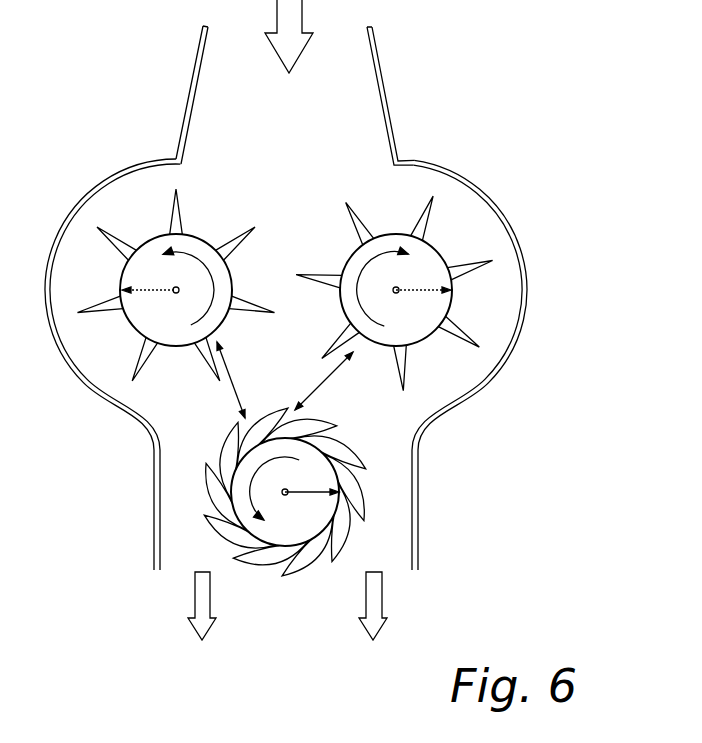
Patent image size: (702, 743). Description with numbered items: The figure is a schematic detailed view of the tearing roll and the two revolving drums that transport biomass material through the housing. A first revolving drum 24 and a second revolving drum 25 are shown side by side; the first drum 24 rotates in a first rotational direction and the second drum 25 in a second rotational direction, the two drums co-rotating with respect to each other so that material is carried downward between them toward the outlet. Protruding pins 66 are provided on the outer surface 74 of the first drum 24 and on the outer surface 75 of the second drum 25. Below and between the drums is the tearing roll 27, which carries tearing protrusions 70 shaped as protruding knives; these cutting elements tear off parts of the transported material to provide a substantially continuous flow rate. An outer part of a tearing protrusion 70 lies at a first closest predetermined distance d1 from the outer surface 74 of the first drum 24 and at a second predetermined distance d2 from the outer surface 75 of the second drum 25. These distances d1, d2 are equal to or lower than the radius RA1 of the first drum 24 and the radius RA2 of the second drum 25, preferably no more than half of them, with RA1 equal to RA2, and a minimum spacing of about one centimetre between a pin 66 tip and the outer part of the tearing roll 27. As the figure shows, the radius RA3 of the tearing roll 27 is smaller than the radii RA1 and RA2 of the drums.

The first revolving drum 24 is at (200, 217).
The second revolving drum 25 is at (395, 225).
The protruding pins 66 is at (247, 230).
The outer surface of the first drum 74 is at (226, 325).
The outer surface of the second drum 75 is at (378, 348).
The tearing roll 27 is at (240, 490).
The tearing protrusions 70 is at (328, 457).
The radius of the first drum RA1 is at (168, 286).
The radius of the second drum RA2 is at (404, 286).
The radius of the tearing roll RA3 is at (294, 488).
The first predetermined distance d1 is at (239, 380).
The second predetermined distance d2 is at (325, 381).